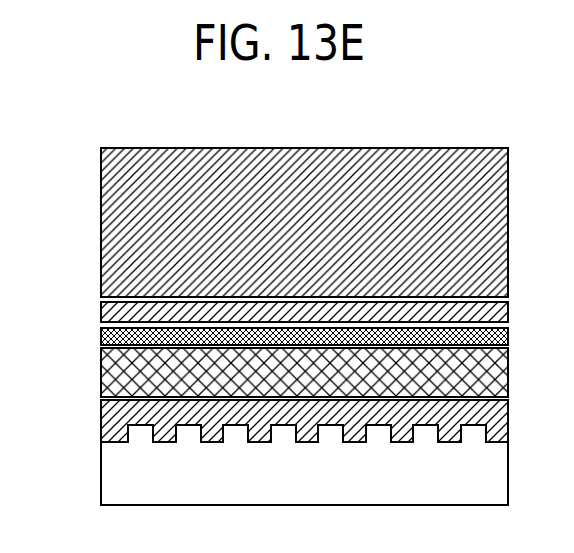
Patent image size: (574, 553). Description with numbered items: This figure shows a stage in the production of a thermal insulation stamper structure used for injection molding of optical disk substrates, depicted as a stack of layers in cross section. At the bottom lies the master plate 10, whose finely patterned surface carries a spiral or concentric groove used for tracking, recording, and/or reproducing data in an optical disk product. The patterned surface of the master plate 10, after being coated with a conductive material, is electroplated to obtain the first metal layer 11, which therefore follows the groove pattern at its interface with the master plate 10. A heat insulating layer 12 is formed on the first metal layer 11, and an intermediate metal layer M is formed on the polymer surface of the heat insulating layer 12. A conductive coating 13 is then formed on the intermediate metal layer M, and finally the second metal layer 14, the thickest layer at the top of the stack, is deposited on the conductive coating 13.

The second metal layer 14 is at (100, 213).
The conductive coating 13 is at (100, 313).
The intermediate metal layer M is at (100, 340).
The heat insulating layer 12 is at (100, 369).
The first metal layer 11 is at (100, 428).
The master plate 10 is at (100, 476).